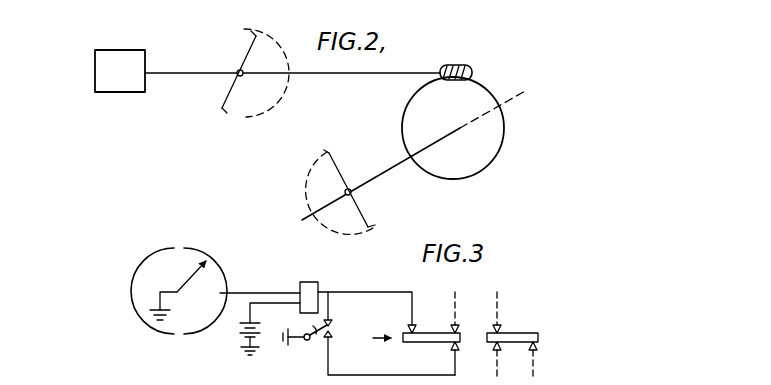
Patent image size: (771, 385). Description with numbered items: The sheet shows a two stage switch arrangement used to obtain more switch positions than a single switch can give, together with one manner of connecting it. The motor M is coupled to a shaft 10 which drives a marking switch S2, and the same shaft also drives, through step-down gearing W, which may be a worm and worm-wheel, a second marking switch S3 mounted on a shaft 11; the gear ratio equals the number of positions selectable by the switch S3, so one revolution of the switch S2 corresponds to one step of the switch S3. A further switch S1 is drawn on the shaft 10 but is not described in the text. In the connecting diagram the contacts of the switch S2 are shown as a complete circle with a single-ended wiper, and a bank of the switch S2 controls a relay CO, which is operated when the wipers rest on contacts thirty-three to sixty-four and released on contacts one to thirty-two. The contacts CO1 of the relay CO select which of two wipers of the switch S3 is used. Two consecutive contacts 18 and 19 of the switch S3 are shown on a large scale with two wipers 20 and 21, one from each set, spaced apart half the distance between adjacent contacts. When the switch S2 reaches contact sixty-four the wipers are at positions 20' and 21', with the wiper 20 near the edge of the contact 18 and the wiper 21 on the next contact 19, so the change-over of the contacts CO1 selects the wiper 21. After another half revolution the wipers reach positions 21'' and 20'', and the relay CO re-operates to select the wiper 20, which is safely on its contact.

In FIG. 2, the motor M is at (120, 71).
In FIG. 2, the shaft 10 is at (168, 74).
In FIG. 2, the switch S1 is at (255, 67).
In FIG. 2, the step-down gearing W is at (480, 87).
In FIG. 2, the shaft 11 is at (387, 170).
In FIG. 2, the marking switch S3 is at (352, 225).
In FIG. 3, the marking switch S3 is at (551, 309).
In FIG. 3, the marking switch S2 is at (180, 242).
In FIG. 3, the relay CO is at (300, 286).
In FIG. 3, the relay contacts CO1 is at (369, 333).
In FIG. 3, the contact 18 is at (423, 343).
In FIG. 3, the contact 19 is at (539, 333).
In FIG. 3, the wiper 20 is at (381, 312).
In FIG. 3, the wiper position 20' is at (466, 312).
In FIG. 3, the wiper position 20'' is at (513, 312).
In FIG. 3, the wiper 21 is at (468, 358).
In FIG. 3, the wiper position 21' is at (511, 360).
In FIG. 3, the wiper position 21'' is at (563, 360).